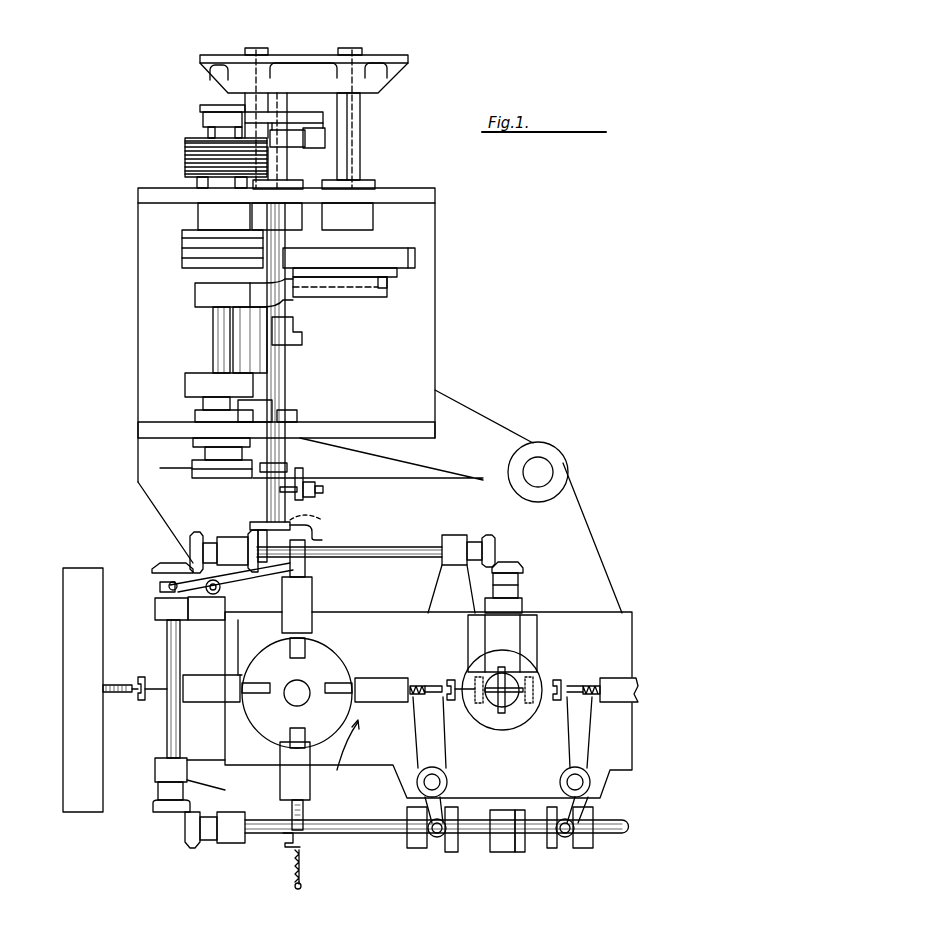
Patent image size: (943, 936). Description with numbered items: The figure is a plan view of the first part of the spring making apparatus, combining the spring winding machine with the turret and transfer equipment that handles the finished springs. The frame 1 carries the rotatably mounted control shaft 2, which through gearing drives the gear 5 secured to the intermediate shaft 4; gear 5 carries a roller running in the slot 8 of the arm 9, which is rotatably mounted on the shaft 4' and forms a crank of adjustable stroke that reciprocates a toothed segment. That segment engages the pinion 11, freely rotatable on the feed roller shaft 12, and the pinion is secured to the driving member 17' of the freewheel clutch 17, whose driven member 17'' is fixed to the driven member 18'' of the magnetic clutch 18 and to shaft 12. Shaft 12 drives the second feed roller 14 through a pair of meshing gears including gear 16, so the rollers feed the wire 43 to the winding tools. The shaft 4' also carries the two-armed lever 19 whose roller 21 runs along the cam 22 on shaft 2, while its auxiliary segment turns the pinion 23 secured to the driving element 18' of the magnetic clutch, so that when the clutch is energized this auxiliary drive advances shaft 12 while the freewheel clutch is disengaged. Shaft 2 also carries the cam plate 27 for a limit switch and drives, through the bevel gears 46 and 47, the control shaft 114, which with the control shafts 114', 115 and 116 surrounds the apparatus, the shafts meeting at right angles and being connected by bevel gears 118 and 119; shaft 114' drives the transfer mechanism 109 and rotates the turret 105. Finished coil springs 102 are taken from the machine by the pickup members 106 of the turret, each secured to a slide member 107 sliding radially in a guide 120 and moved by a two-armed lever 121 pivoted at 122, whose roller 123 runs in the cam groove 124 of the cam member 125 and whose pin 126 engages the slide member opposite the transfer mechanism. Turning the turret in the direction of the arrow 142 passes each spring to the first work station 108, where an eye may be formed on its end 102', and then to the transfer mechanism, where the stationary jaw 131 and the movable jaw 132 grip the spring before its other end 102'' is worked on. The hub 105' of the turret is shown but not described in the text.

The frame 1 is at (436, 208).
The control shaft 2 is at (280, 380).
The intermediate shaft 4 is at (357, 119).
The shaft 4' is at (216, 340).
The gear 5 is at (388, 250).
The slot 8 is at (388, 284).
The arm 9 is at (360, 297).
The pinion 11 is at (200, 297).
The feed roller shaft 12 is at (220, 330).
The feed roller 14 is at (200, 480).
The gear 16 is at (186, 385).
The freewheel clutch 17 is at (180, 249).
The driving member of freewheel clutch 17' is at (203, 271).
The driven member of freewheel clutch 17'' is at (208, 225).
The magnetic clutch 18 is at (192, 163).
The driving element of magnetic clutch 18' is at (205, 128).
The driven member of magnetic clutch 18'' is at (202, 172).
The two-armed lever 19 is at (293, 112).
The roller 21 is at (326, 137).
The cam 22 is at (290, 147).
The pinion 23 is at (202, 110).
The cam plate 27 is at (302, 338).
The wire 43 is at (160, 468).
The bevel gear 46 is at (312, 519).
The bevel gear 47 is at (250, 546).
The coil spring 102 is at (303, 662).
The spring end 102' is at (227, 774).
The other spring end 102'' is at (322, 681).
The turret 105 is at (305, 724).
The hub 105' is at (314, 680).
The pickup member 106 is at (320, 540).
The slide member 107 is at (312, 580).
The first work station 108 is at (103, 650).
The transfer mechanism 109 is at (545, 650).
The control shaft 114 is at (369, 564).
The control shaft 114' is at (529, 589).
The control shaft 115 is at (168, 735).
The control shaft 116 is at (370, 836).
The bevel gear 118 is at (190, 550).
The bevel gear 119 is at (160, 566).
The guide 120 is at (312, 601).
The two-armed lever 121 is at (242, 585).
The pivot 122 is at (560, 782).
The roller 123 is at (437, 838).
The cam groove 124 is at (162, 585).
The cam member 125 is at (158, 600).
The pin 126 is at (418, 685).
The jaw 131 is at (303, 482).
The jaw 132 is at (286, 490).
The arrow 142 is at (340, 756).